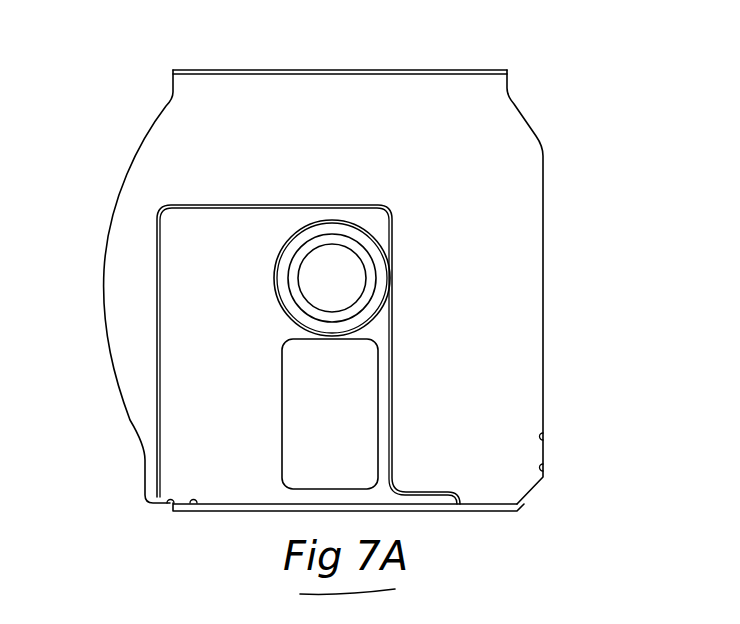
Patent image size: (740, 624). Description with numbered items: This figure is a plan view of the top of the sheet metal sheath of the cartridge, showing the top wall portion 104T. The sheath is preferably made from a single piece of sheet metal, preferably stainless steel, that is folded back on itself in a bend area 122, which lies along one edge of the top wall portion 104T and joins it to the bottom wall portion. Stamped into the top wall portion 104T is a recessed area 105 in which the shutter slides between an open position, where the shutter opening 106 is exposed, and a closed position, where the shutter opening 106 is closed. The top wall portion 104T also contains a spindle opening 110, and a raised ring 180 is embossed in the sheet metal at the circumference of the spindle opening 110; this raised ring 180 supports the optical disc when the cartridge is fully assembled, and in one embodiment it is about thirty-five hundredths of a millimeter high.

The bend area 122 is at (372, 45).
The top wall portion 104T is at (525, 295).
The raised ring 180 is at (301, 245).
The spindle opening 110 is at (338, 291).
The recessed area 105 is at (238, 353).
The shutter opening 106 is at (350, 432).